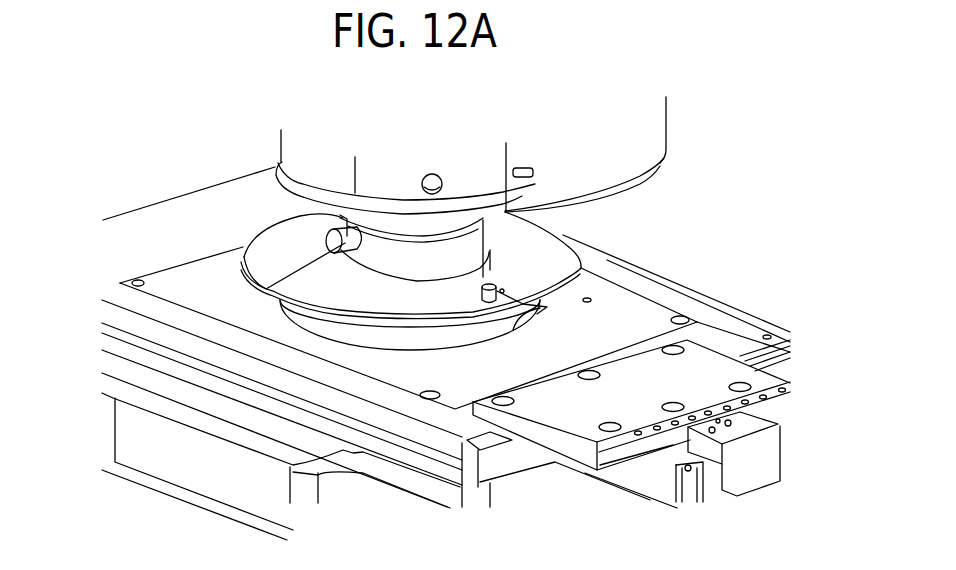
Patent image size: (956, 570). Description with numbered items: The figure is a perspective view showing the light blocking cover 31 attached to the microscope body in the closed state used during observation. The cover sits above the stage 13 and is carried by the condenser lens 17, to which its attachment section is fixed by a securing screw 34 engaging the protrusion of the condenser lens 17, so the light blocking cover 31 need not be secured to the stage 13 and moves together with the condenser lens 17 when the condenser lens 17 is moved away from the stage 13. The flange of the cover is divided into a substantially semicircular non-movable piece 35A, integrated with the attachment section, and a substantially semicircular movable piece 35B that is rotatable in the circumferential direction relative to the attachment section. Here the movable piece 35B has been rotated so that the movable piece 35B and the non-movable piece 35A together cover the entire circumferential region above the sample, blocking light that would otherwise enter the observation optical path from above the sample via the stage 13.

The stage 13 is at (128, 228).
The condenser lens 17 is at (655, 128).
The light blocking cover 31 is at (401, 234).
The securing screw 34 is at (325, 252).
The non-movable piece 35A is at (558, 252).
The movable piece 35B is at (267, 247).